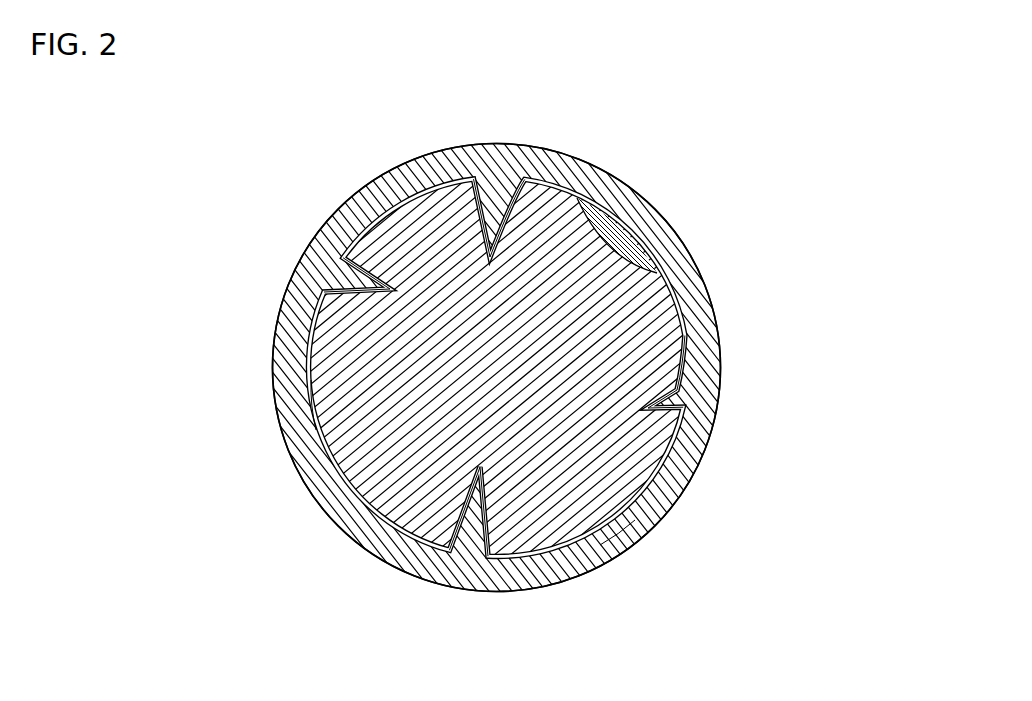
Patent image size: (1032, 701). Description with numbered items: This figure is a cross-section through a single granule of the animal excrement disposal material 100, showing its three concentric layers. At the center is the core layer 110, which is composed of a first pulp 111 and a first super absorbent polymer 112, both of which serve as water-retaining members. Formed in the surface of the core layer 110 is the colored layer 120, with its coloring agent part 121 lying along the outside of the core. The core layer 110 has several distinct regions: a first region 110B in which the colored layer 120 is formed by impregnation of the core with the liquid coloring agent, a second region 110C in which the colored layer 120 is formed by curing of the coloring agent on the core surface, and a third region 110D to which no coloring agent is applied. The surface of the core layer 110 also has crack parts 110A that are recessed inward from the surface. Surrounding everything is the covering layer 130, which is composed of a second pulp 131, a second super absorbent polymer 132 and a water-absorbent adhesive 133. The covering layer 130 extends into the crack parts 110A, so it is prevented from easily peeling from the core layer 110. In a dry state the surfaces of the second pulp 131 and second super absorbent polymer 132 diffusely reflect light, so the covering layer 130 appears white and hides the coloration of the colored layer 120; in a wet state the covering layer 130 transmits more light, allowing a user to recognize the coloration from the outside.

The animal excrement disposal material 100 is at (273, 213).
The core layer 110 is at (450, 272).
The crack part 110A is at (490, 256).
The first region 110B is at (632, 237).
The second region 110C is at (688, 336).
The third region 110D is at (617, 530).
The first pulp 111 is at (357, 318).
The first super absorbent polymer 112 is at (362, 345).
The colored layer 120 is at (688, 297).
The coloring agent part 121 is at (313, 407).
The covering layer 130 is at (700, 462).
The second pulp 131 is at (306, 480).
The second super absorbent polymer 132 is at (342, 523).
The water-absorbent adhesive 133 is at (400, 567).